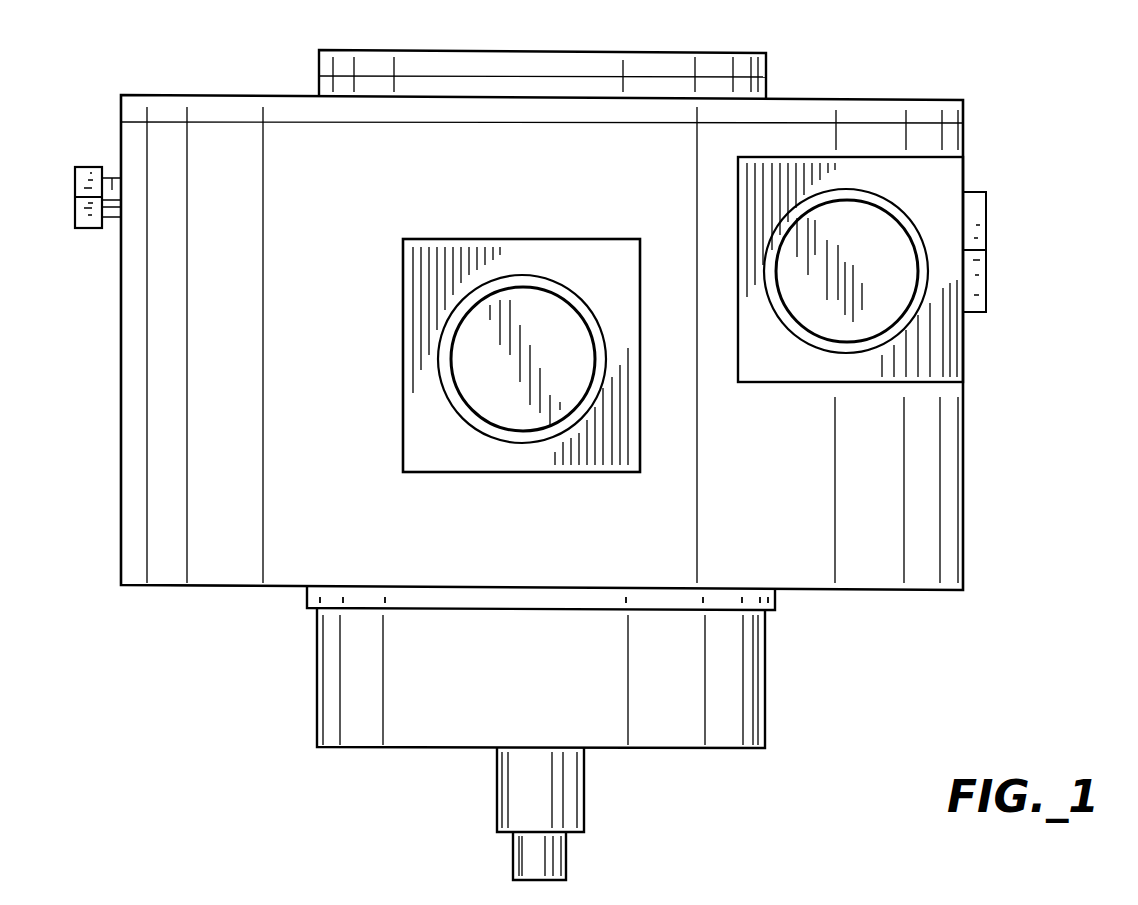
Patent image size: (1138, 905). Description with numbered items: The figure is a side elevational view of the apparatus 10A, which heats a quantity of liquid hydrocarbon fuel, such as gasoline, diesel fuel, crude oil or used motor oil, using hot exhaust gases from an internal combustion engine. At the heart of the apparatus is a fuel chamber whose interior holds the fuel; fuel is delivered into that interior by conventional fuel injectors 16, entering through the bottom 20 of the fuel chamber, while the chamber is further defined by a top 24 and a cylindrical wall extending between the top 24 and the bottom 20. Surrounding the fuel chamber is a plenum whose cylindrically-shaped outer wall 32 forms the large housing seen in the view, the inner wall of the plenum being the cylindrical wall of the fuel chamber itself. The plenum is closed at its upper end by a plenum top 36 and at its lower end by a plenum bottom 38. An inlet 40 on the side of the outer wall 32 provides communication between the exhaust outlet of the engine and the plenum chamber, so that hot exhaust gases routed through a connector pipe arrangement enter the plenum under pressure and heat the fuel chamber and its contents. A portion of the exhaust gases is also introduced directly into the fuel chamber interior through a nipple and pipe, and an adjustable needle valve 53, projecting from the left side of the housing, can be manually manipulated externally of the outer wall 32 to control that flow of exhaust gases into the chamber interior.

The apparatus 10A is at (188, 95).
The fuel injectors 16 is at (585, 798).
The bottom 20 is at (777, 600).
The top 24 is at (670, 50).
The outer wall 32 is at (964, 503).
The plenum top 36 is at (898, 100).
The plenum bottom 38 is at (227, 590).
The inlet 40 is at (887, 215).
The adjustable needle valve 53 is at (115, 183).